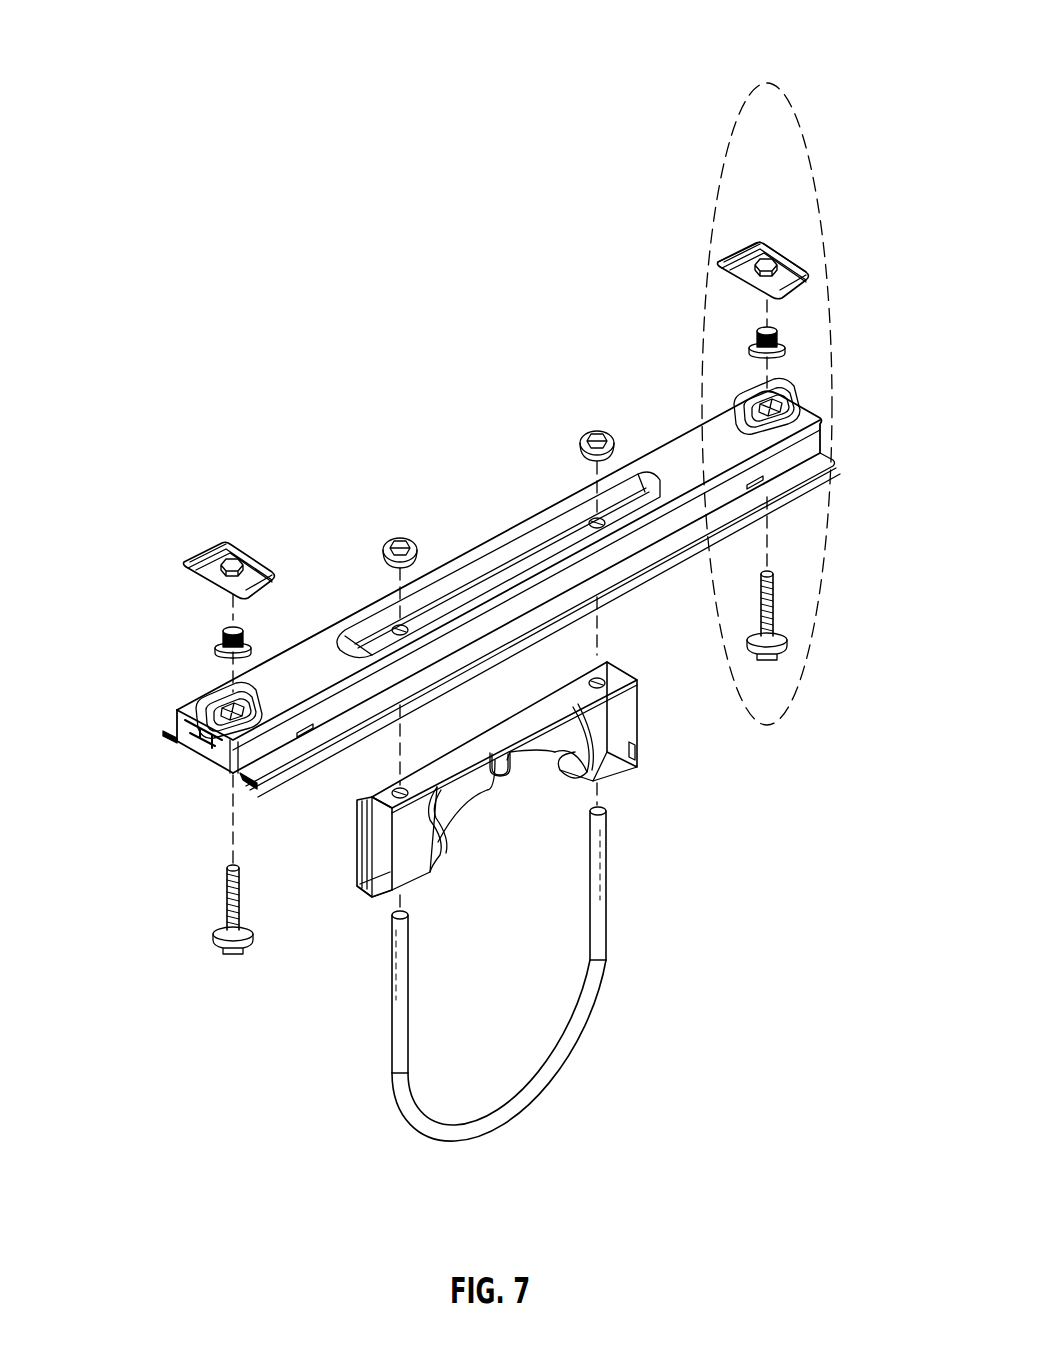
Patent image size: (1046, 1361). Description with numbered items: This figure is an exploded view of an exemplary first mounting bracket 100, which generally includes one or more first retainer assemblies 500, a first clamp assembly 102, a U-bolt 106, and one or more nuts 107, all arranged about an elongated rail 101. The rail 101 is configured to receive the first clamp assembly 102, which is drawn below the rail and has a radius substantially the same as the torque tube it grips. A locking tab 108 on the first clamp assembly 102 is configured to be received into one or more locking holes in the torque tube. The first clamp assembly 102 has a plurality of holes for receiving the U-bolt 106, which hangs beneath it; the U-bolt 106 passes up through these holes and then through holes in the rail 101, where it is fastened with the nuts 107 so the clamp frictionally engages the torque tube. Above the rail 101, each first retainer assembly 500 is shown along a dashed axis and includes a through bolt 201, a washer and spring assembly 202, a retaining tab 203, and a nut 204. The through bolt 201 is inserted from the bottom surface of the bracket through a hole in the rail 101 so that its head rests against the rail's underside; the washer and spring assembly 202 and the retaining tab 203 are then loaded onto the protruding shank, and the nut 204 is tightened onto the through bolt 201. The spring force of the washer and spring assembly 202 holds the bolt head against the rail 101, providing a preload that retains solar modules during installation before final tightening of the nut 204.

The first mounting bracket 100 is at (186, 258).
The rail 101 is at (165, 722).
The first clamp assembly 102 is at (643, 727).
The U-bolt 106 is at (537, 1110).
The nuts 107 is at (383, 543).
The locking tab 108 is at (500, 772).
The through bolt 201 is at (793, 615).
The washer and spring assembly 202 is at (790, 331).
The retaining tab 203 is at (823, 270).
The nut 204 is at (779, 262).
The first retainer assembly 500 is at (763, 82).